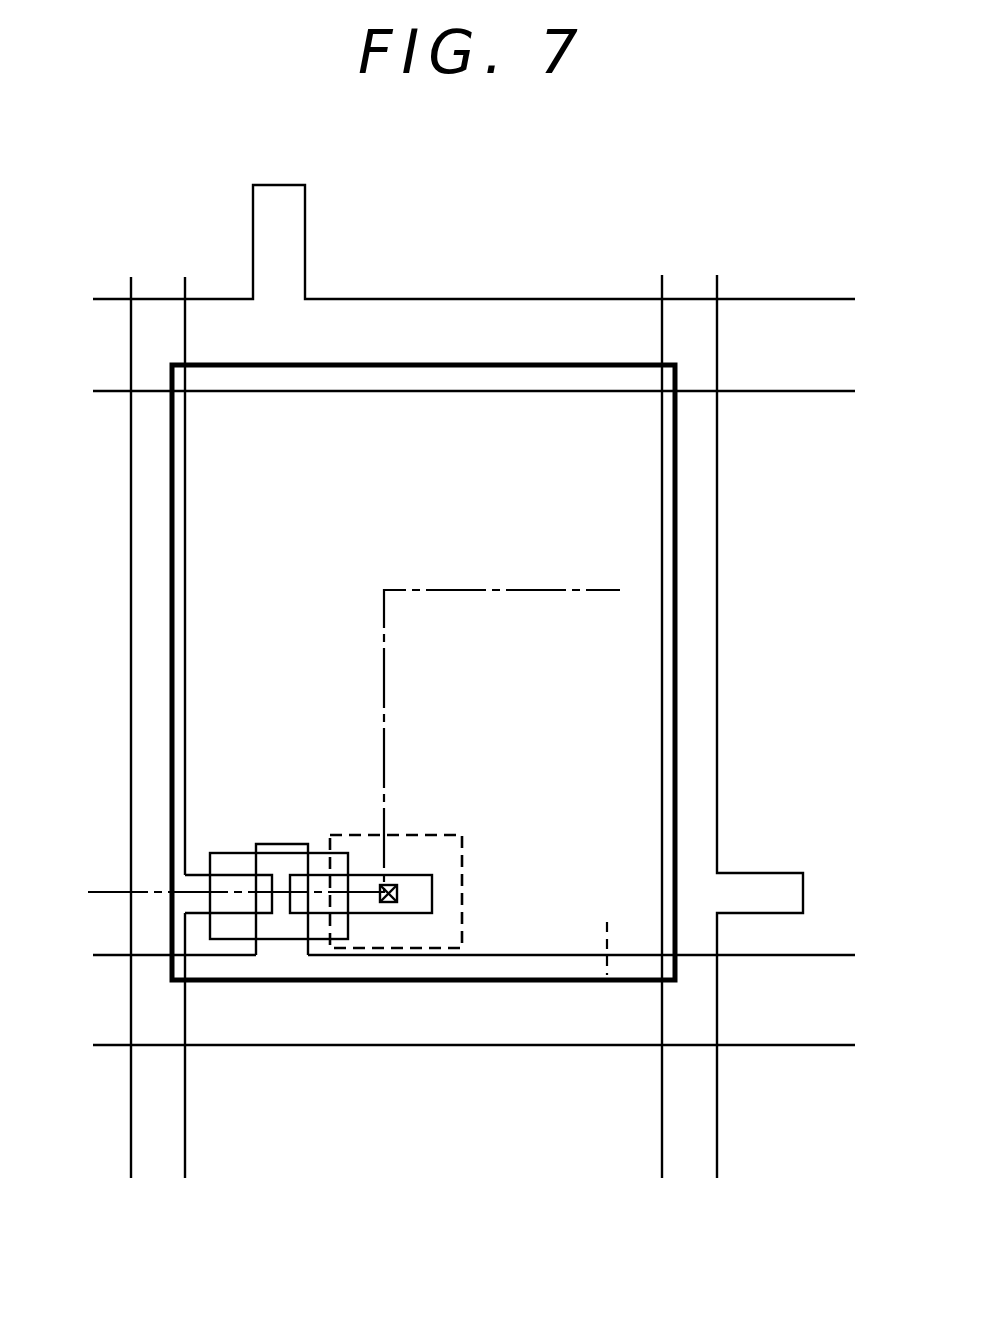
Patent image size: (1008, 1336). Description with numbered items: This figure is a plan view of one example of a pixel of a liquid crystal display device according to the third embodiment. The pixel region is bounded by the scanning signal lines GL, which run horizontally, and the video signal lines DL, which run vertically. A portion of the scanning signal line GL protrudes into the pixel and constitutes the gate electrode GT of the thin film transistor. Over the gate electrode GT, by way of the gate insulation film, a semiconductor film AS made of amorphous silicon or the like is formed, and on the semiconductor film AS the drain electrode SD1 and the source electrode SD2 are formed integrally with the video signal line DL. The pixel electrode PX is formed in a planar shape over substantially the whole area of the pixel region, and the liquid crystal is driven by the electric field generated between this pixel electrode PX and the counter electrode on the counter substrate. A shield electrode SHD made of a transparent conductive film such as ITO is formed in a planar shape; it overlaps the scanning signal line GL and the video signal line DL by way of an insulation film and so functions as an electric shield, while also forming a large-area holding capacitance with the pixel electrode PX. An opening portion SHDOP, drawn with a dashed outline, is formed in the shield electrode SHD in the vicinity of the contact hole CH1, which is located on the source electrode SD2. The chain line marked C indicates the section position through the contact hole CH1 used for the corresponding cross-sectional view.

The pixel electrode PX is at (475, 363).
The video signal line DL is at (153, 747).
The scanning signal line GL is at (468, 1022).
The gate electrode GT is at (267, 846).
The drain electrode SD1 is at (235, 913).
The source electrode SD2 is at (300, 915).
The semiconductor film AS is at (273, 940).
The contact hole CH1 is at (392, 905).
The opening portion SHDOP is at (462, 893).
The shield electrode SHD is at (609, 975).
The section line C- C is at (359, 739).